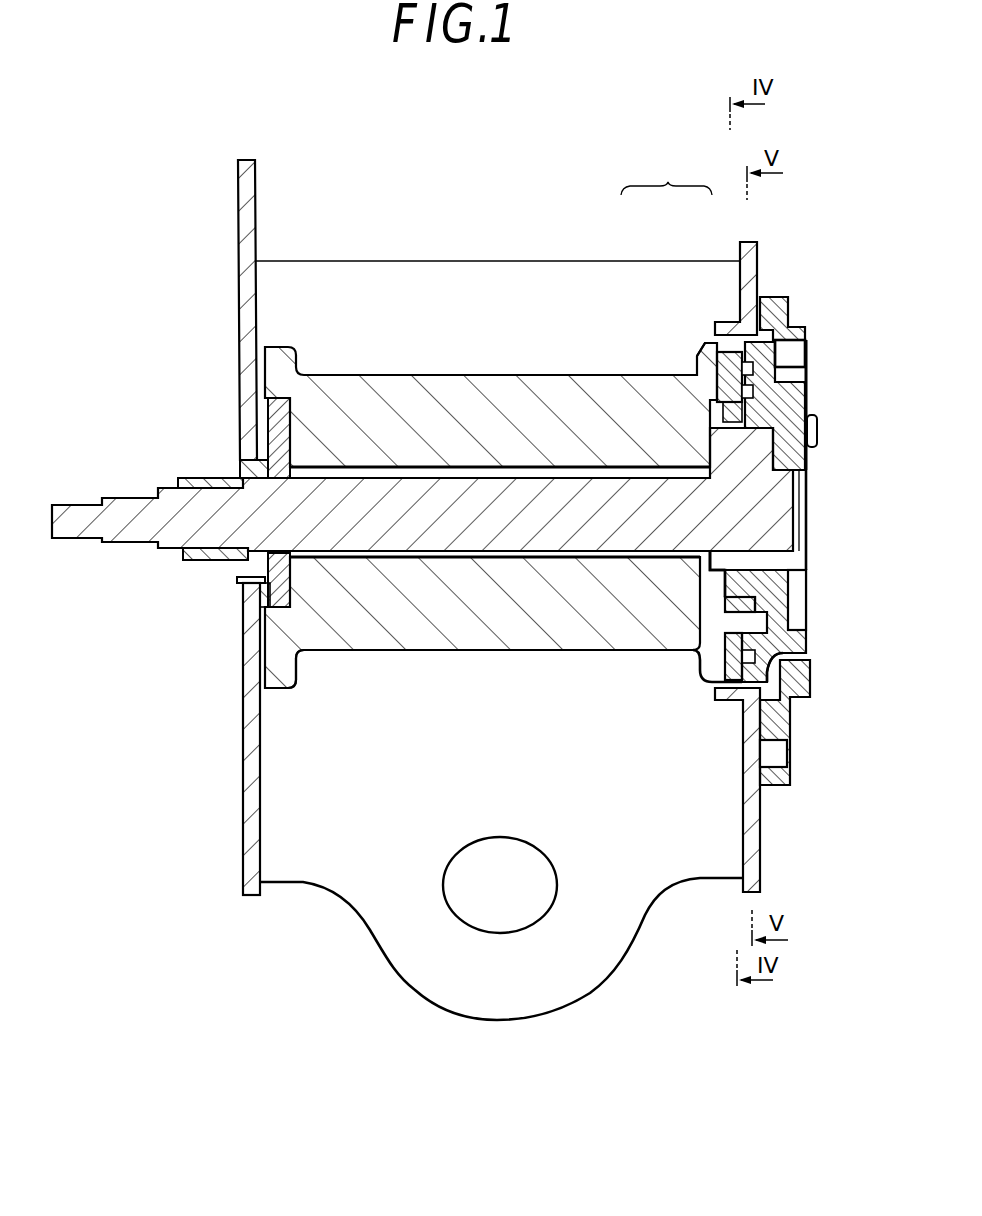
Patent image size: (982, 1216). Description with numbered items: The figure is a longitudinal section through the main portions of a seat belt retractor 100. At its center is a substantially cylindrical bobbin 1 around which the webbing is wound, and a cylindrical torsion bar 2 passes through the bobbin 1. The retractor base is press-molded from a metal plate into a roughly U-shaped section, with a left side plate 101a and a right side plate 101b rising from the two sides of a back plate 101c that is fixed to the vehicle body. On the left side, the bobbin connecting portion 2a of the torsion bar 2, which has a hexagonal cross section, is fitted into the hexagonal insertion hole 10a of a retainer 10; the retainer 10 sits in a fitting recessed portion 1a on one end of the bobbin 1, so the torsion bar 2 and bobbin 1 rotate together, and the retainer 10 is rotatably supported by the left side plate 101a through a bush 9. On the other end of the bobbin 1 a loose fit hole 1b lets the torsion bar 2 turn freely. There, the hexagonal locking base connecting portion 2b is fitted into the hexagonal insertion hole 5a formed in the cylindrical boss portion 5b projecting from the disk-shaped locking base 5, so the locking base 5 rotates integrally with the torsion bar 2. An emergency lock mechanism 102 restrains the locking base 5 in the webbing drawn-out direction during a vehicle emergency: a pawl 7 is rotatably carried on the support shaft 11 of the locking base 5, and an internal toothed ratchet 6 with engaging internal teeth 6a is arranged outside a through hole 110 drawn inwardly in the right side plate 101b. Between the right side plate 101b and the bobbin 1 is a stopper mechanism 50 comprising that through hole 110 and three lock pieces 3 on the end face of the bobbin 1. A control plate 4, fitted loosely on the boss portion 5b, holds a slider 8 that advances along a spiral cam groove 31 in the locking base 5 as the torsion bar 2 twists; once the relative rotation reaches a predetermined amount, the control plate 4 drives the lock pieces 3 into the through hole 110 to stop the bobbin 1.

The bobbin 1 is at (553, 652).
The fitting recessed portion 1a is at (250, 408).
The loose fit hole 1b is at (683, 527).
The torsion bar 2 is at (486, 464).
The bobbin connecting portion 2a is at (318, 600).
The locking base connecting portion 2b is at (703, 372).
The lock pieces 3 is at (700, 345).
The control plate 4 is at (697, 668).
The locking base 5 is at (793, 403).
The insertion hole 5a is at (782, 540).
The boss portion 5b is at (717, 580).
The internal toothed ratchet 6 is at (792, 313).
The engaging internal teeth 6a is at (797, 675).
The pawl 7 is at (816, 430).
The slider 8 is at (716, 610).
The bush 9 is at (240, 580).
The retainer 10 is at (216, 466).
The insertion hole 10a is at (177, 543).
The support shaft 11 is at (815, 455).
The cam groove 31 is at (778, 375).
The stopper mechanism 50 is at (666, 171).
The seat belt retractor 100 is at (518, 256).
The left side plate 101a is at (258, 793).
The right side plate 101b is at (748, 777).
The bottom bracket 101c is at (605, 942).
The emergency lock mechanism 102 is at (828, 335).
The through hole 110 is at (720, 330).